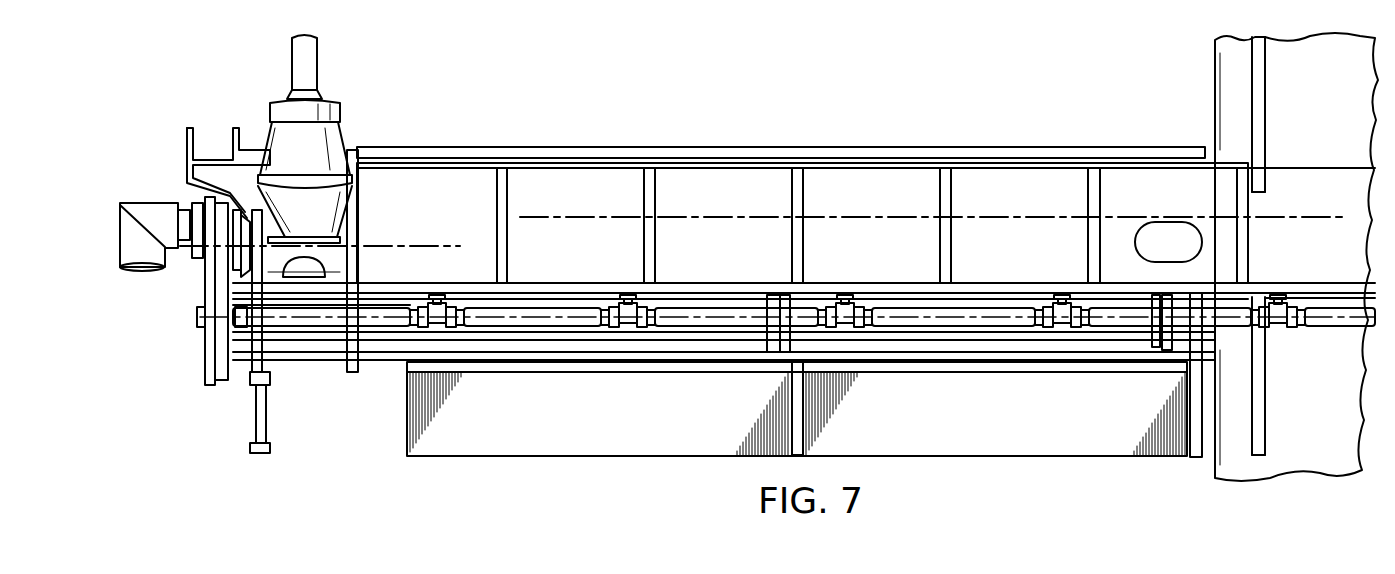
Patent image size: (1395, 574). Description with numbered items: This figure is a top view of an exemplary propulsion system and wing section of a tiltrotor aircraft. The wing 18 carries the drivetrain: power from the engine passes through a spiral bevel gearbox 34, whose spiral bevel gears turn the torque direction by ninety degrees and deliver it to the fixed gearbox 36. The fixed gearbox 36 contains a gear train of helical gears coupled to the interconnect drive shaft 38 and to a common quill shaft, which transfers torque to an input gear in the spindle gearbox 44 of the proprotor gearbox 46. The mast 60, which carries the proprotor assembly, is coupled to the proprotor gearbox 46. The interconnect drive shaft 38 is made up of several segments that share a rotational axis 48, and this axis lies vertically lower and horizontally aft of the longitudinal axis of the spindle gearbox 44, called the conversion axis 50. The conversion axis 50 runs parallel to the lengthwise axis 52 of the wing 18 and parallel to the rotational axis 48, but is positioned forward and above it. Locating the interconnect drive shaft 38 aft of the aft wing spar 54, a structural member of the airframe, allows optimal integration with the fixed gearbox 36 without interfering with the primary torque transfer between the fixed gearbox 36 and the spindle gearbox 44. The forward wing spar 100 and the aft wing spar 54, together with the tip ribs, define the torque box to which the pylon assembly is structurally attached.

The wing 18 is at (728, 190).
The spiral bevel gearbox 34 is at (120, 240).
The fixed gearbox 36 is at (205, 360).
The interconnect drive shaft 38 is at (385, 330).
The spindle gearbox 44 is at (287, 260).
The proprotor gearbox 46 is at (330, 100).
The rotational axis 48 is at (510, 320).
The conversion axis 50 is at (430, 245).
The lengthwise axis 52 is at (893, 220).
The aft wing spar 54 is at (723, 290).
The mast 60 is at (290, 62).
The forward wing spar 100 is at (857, 155).